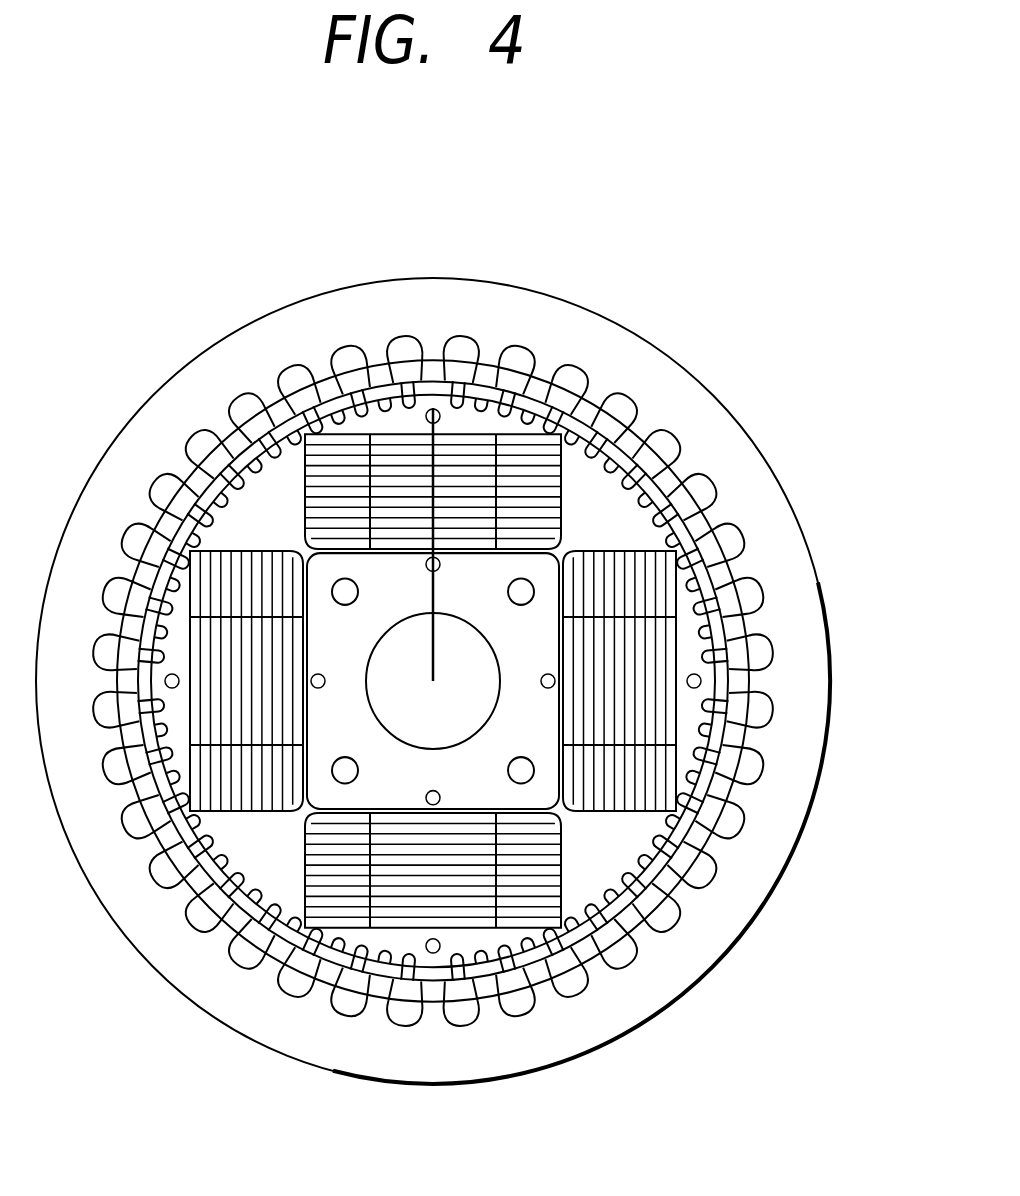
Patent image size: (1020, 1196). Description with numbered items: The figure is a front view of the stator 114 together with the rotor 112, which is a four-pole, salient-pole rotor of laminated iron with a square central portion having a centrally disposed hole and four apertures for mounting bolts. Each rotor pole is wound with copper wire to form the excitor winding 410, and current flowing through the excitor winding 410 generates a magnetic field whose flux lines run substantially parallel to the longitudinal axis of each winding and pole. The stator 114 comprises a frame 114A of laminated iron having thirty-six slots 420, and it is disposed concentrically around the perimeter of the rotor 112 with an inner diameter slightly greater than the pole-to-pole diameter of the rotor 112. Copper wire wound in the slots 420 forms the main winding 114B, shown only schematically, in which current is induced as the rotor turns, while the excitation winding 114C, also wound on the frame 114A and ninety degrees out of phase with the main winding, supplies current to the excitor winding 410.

The rotor 112 is at (433, 680).
The stator 114 is at (470, 639).
The frame 114A is at (768, 513).
The main winding 114B is at (706, 838).
The excitation winding 114C is at (641, 901).
The excitor winding 410 is at (537, 483).
The slots 420 is at (342, 353).